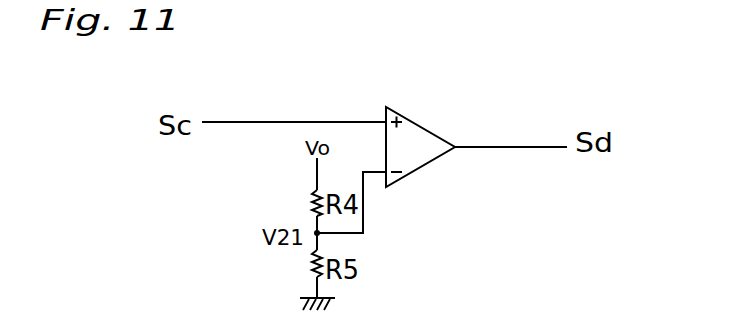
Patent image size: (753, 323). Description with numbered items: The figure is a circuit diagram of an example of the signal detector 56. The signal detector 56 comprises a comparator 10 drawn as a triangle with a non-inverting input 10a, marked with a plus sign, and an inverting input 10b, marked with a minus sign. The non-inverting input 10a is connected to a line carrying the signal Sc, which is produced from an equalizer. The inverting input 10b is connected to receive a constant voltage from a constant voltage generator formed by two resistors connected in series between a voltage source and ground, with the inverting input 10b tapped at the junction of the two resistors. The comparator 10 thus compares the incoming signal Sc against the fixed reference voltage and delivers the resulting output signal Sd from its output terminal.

The comparator 10 is at (429, 129).
The non-inverting input 10a is at (385, 119).
The inverting input 10b is at (386, 181).
The signal detector 56 is at (501, 106).